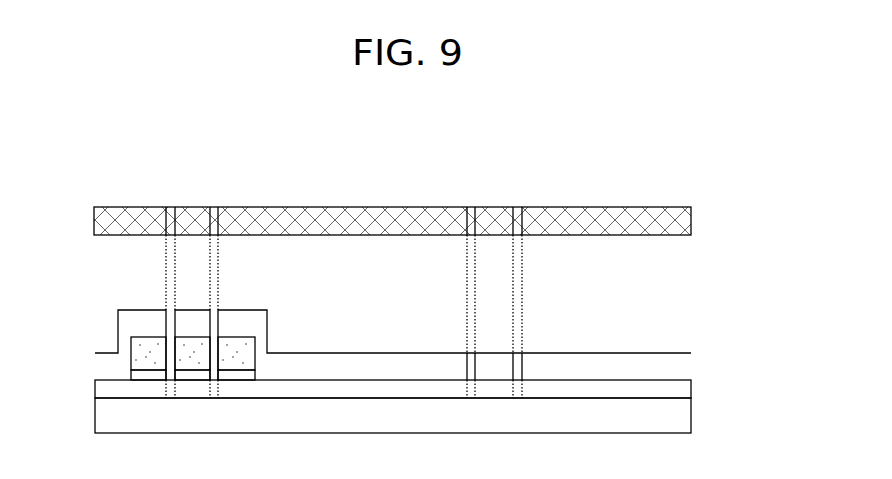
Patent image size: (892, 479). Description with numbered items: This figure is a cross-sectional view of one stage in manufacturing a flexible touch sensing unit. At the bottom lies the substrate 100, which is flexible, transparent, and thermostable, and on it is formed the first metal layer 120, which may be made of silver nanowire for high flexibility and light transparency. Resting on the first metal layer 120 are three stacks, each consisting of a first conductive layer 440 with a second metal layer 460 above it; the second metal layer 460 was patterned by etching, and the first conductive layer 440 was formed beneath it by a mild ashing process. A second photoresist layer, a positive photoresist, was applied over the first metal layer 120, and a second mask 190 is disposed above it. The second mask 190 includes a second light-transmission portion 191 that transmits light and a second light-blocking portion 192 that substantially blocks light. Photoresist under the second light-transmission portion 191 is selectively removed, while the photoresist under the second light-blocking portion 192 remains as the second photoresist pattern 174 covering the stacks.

The substrate 100 is at (100, 416).
The first metal layer 120 is at (96, 387).
The second photoresist pattern 174 is at (693, 357).
The first conductive layer 440 is at (130, 372).
The second metal layer 460 is at (130, 341).
The second mask 190 is at (93, 216).
The second light-transmission portion 191 is at (470, 210).
The second light-blocking portion 192 is at (333, 222).